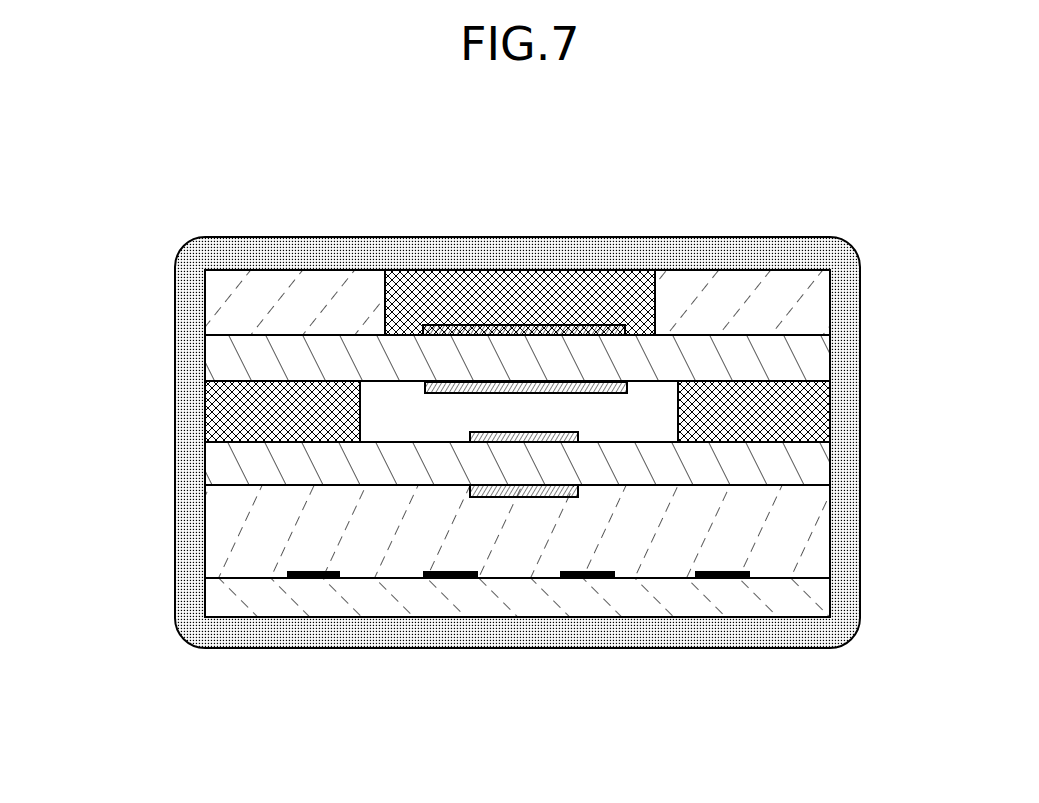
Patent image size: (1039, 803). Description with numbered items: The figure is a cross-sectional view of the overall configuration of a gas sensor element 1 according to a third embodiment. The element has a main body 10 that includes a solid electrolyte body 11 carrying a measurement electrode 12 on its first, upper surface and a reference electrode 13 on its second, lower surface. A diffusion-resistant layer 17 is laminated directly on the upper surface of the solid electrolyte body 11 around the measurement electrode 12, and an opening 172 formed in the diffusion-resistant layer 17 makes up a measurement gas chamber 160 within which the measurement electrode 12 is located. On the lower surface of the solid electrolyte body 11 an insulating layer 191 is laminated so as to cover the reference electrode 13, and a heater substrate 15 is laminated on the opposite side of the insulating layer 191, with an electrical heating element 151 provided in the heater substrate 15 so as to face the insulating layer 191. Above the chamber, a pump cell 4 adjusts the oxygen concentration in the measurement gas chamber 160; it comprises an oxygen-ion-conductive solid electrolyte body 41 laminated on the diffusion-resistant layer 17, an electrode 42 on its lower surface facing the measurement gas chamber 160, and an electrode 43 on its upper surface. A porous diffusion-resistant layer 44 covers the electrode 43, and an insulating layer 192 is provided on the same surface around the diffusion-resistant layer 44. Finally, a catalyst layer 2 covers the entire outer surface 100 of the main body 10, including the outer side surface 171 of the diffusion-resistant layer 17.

The gas sensor element 1 is at (150, 645).
The catalyst layer 2 is at (813, 243).
The pump cell 4 is at (520, 221).
The main body 10 is at (516, 620).
The solid electrolyte body 11 is at (223, 458).
The measurement electrode 12 is at (567, 432).
The reference electrode 13 is at (517, 497).
The heater substrate 15 is at (397, 600).
The diffusion-resistant layer 17 is at (532, 428).
The solid electrolyte body 41 is at (223, 349).
The electrode 42 is at (428, 393).
The electrode 43 is at (542, 320).
The porous diffusion-resistant layer 44 is at (587, 325).
The outer surface 100 is at (833, 473).
The electrical heating element 151 is at (313, 578).
The measurement gas chamber 160 is at (647, 405).
The outer side surface 171 is at (833, 392).
The opening 172 is at (360, 410).
The insulating layer 191 is at (793, 537).
The insulating layer 192 is at (297, 300).